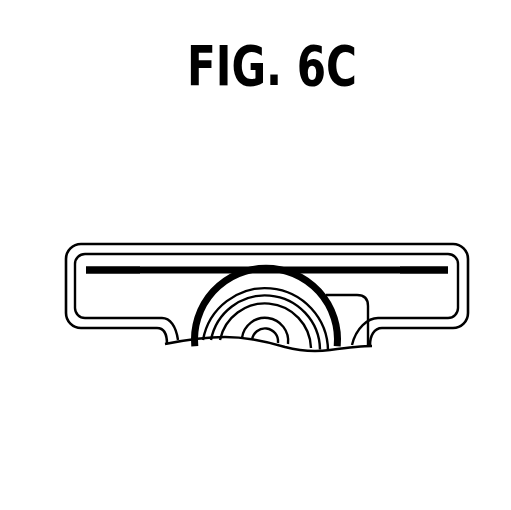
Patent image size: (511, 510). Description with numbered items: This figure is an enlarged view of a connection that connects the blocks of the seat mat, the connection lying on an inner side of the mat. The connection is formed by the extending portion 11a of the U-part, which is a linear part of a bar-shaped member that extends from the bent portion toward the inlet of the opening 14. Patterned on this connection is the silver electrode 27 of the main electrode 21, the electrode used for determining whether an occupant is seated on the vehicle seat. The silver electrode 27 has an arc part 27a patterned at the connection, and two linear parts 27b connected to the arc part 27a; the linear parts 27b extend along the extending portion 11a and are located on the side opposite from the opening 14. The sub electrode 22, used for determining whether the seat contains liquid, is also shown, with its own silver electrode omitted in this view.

The extending portion 11a is at (120, 298).
The opening 14 is at (148, 337).
The main electrode 21 is at (180, 298).
The sub electrode 22 is at (235, 330).
The silver electrode 27 is at (356, 257).
The arc part 27a is at (368, 347).
The linear parts 27b is at (125, 265).